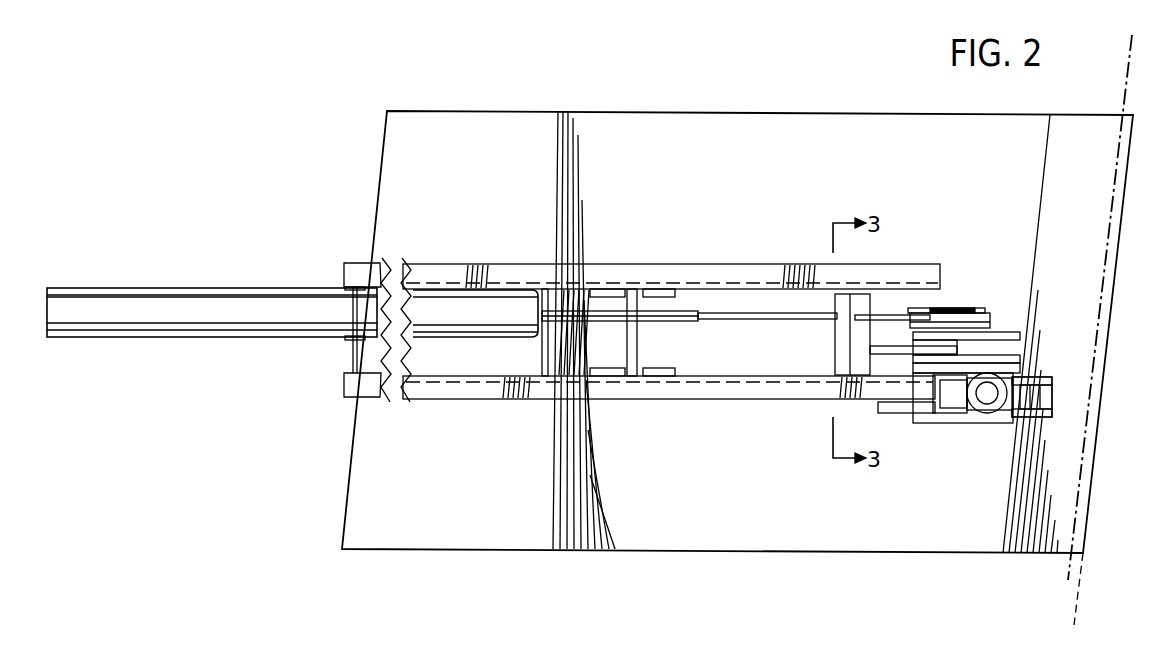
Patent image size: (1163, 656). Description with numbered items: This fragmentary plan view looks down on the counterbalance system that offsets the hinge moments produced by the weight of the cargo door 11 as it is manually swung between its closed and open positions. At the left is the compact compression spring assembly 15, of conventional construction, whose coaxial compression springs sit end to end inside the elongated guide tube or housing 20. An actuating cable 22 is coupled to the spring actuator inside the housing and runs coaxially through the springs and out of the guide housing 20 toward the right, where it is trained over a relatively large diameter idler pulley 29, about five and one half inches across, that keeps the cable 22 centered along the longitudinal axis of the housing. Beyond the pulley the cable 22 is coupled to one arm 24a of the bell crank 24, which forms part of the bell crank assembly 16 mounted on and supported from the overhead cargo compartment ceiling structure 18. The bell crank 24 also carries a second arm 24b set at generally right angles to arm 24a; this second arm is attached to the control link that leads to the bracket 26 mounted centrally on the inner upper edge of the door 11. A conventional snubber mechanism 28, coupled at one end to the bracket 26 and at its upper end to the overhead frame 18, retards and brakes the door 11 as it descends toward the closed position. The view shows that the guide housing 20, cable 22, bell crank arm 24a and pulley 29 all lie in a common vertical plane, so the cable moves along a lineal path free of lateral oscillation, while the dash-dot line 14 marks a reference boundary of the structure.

The door 11 is at (800, 535).
The reference line 14 is at (1080, 600).
The compression spring assembly 15 is at (150, 346).
The bell crank assembly 16 is at (965, 297).
The overhead cargo compartment ceiling structure 18 is at (1037, 415).
The guide tube or housing 20 is at (272, 327).
The actuating cable 22 is at (780, 319).
The bell crank 24 is at (842, 343).
The bell crank arm 24a is at (893, 315).
The second bell crank arm 24b is at (878, 400).
The bracket 26 is at (1002, 418).
The snubber mechanism 28 is at (965, 412).
The idler pulley 29 is at (672, 322).